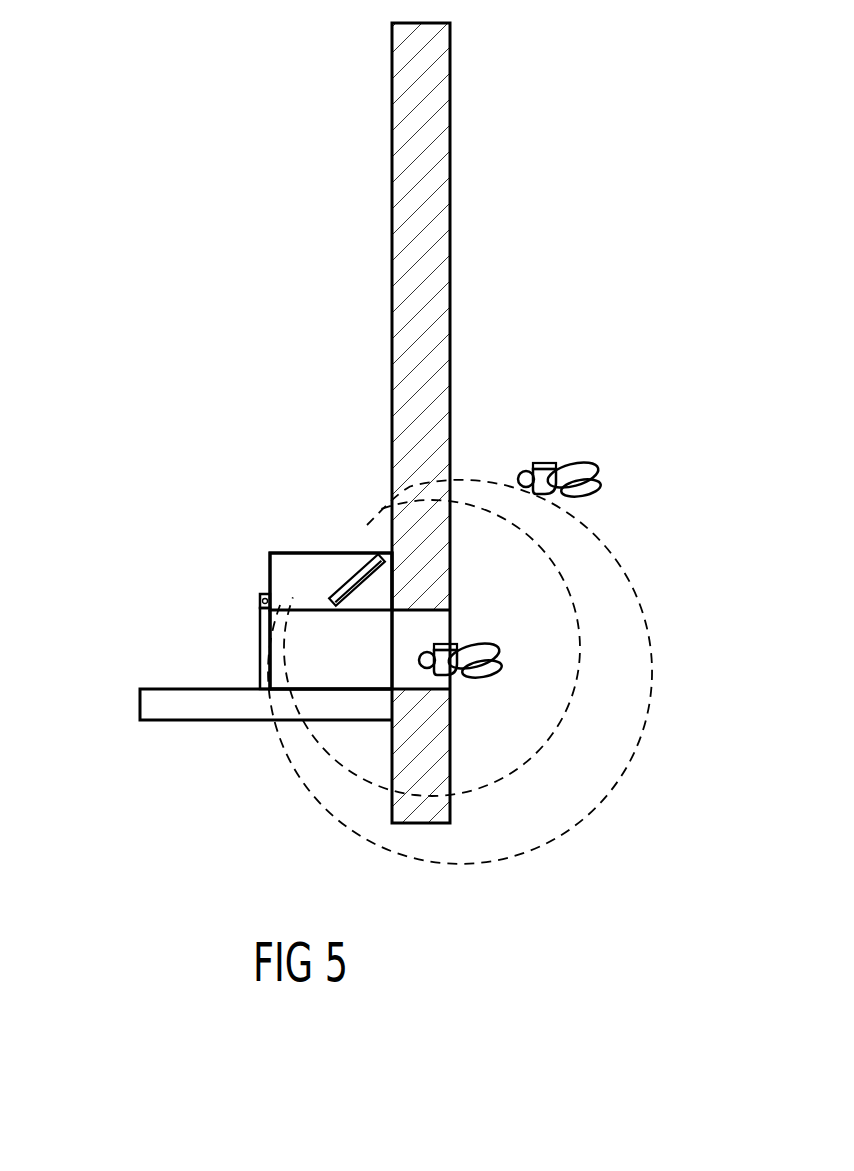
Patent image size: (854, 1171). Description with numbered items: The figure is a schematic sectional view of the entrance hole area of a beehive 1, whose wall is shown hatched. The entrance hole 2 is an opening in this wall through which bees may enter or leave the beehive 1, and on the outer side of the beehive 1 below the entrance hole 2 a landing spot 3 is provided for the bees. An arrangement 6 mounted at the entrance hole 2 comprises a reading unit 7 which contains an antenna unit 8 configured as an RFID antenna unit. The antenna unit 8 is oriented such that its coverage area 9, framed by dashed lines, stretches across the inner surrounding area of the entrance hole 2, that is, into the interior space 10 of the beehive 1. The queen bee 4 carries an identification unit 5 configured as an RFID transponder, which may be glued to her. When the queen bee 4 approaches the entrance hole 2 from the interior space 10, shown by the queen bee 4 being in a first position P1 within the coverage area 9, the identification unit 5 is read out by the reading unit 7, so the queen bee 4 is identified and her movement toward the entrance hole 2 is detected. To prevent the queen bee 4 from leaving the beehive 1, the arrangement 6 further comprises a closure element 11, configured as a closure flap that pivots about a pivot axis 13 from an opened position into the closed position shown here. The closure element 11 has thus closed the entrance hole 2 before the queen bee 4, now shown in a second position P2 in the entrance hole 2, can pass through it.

The beehive 1 is at (433, 103).
The entrance hole 2 is at (303, 675).
The landing spot 3 is at (160, 708).
The queen bee 4 is at (600, 485).
The identification unit 5 is at (541, 463).
The arrangement 6 is at (292, 462).
The reading unit 7 is at (292, 565).
The antenna unit 8 is at (357, 557).
The coverage area 9 is at (630, 630).
The interior space 10 is at (586, 156).
The closure element 11 is at (262, 655).
The pivot axis 13 is at (262, 600).
The first position P1 is at (558, 455).
The second position P2 is at (515, 664).